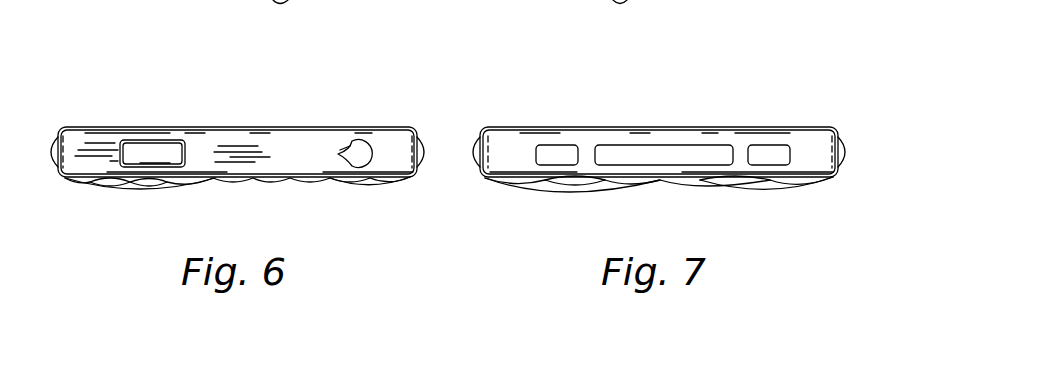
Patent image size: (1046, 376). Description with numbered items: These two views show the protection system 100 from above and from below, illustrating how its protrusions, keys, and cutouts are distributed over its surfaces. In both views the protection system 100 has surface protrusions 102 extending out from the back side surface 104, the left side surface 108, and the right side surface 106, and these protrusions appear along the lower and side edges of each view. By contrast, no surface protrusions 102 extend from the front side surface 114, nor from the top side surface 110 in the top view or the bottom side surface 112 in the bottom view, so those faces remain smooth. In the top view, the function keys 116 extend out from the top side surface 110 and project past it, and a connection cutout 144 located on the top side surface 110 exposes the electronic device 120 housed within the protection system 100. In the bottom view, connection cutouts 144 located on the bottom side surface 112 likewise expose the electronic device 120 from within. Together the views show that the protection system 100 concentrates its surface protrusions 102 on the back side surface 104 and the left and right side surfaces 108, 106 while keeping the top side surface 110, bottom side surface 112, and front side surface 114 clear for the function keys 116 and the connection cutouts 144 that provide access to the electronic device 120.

In FIG. 6, the protection system 100 is at (108, 70).
In FIG. 7, the protection system 100 is at (814, 52).
In FIG. 6, the surface protrusions 102 is at (183, 190).
In FIG. 7, the surface protrusions 102 is at (603, 190).
In FIG. 6, the back side surface 104 is at (368, 180).
In FIG. 7, the back side surface 104 is at (795, 180).
In FIG. 6, the right side surface 106 is at (53, 177).
In FIG. 7, the right side surface 106 is at (847, 133).
In FIG. 6, the left side surface 108 is at (418, 132).
In FIG. 7, the left side surface 108 is at (485, 177).
In FIG. 6, the top side surface 110 is at (282, 157).
In FIG. 7, the bottom side surface 112 is at (808, 143).
In FIG. 6, the front side surface 114 is at (208, 127).
In FIG. 7, the front side surface 114 is at (633, 128).
In FIG. 6, the function keys 116 is at (148, 147).
In FIG. 6, the electronic device 120 is at (370, 140).
In FIG. 7, the electronic device 120 is at (707, 157).
In FIG. 6, the connection cutout 144 is at (348, 142).
In FIG. 7, the connection cutout 144 is at (555, 145).